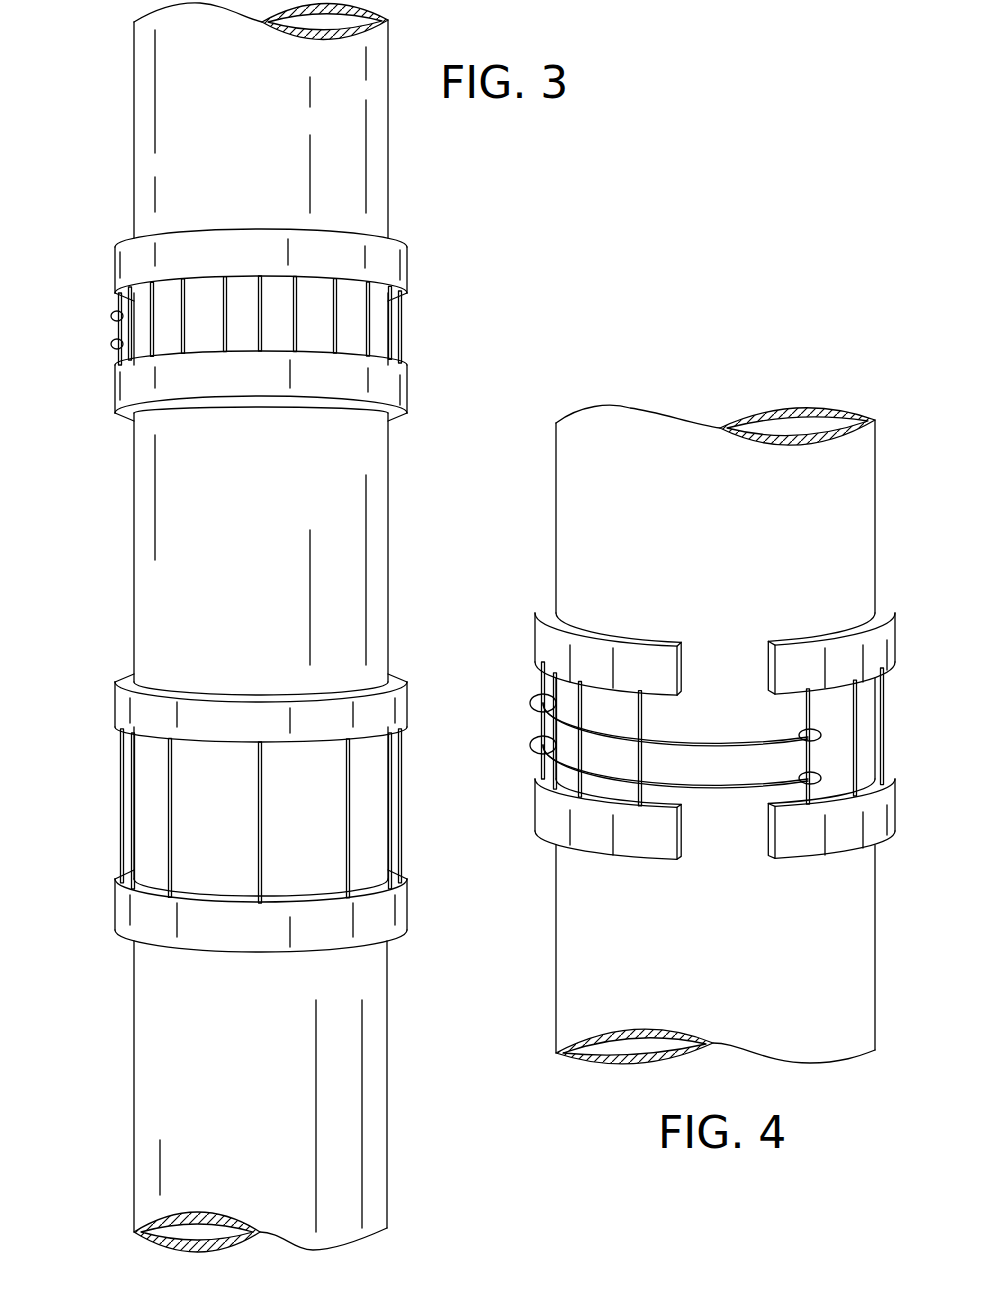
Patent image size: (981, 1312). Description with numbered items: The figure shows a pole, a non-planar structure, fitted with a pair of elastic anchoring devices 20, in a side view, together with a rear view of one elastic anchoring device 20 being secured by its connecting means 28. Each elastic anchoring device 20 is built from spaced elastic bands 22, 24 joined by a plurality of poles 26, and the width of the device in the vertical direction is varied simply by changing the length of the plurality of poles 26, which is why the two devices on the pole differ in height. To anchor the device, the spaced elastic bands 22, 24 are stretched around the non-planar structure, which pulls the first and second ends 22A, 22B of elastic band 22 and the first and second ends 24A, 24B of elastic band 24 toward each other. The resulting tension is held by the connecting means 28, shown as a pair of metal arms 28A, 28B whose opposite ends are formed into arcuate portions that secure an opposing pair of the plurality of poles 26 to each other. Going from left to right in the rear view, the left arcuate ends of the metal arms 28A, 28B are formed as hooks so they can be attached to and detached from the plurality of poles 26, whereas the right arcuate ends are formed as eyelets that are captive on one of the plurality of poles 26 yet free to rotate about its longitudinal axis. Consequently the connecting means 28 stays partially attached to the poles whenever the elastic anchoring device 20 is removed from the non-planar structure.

In FIG. 3, the elastic anchoring device 20 is at (442, 278).
In FIG. 4, the elastic anchoring device 20 is at (520, 586).
In FIG. 3, the elastic band 22 is at (408, 262).
In FIG. 4, the elastic band 22 is at (592, 642).
In FIG. 4, the first end of elastic band 22A is at (780, 665).
In FIG. 4, the second end of elastic band 22B is at (683, 666).
In FIG. 3, the elastic band 24 is at (408, 390).
In FIG. 4, the elastic band 24 is at (590, 860).
In FIG. 4, the first end of elastic band 24A is at (785, 862).
In FIG. 4, the second end of elastic band 24B is at (675, 862).
In FIG. 3, the plurality of poles 26 is at (402, 327).
In FIG. 4, the plurality of poles 26 is at (545, 728).
In FIG. 3, the connecting means 28 is at (77, 302).
In FIG. 3, the metal arm 28A is at (112, 311).
In FIG. 4, the metal arm 28A is at (727, 738).
In FIG. 3, the metal arm 28B is at (112, 349).
In FIG. 4, the metal arm 28B is at (730, 795).